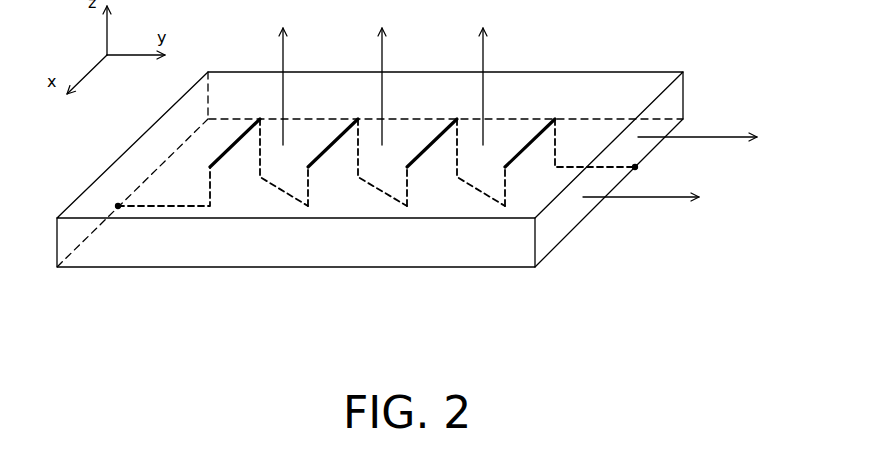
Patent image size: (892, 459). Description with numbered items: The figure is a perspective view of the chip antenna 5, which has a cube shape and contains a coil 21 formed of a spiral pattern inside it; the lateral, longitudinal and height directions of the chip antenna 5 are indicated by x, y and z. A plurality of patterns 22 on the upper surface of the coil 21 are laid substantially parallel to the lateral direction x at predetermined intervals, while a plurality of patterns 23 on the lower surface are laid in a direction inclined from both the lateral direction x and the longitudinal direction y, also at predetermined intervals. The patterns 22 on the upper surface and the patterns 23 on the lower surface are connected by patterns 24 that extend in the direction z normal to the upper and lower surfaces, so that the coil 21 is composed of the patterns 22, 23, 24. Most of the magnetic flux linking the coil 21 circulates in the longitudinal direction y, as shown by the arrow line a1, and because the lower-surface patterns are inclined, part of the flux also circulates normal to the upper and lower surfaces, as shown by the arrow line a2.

The chip antenna 5 is at (106, 288).
The coil 21 is at (377, 240).
The patterns on the upper surface 22 is at (233, 147).
The patterns on the lower surface 23 is at (285, 193).
The patterns 24 is at (452, 153).
The arrow line a1 is at (643, 197).
The arrow line a2 is at (483, 48).